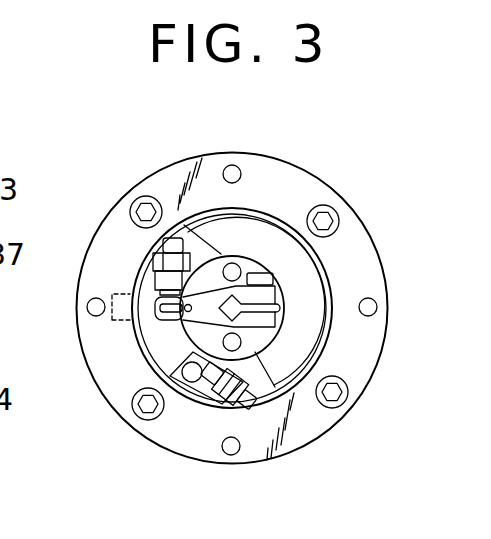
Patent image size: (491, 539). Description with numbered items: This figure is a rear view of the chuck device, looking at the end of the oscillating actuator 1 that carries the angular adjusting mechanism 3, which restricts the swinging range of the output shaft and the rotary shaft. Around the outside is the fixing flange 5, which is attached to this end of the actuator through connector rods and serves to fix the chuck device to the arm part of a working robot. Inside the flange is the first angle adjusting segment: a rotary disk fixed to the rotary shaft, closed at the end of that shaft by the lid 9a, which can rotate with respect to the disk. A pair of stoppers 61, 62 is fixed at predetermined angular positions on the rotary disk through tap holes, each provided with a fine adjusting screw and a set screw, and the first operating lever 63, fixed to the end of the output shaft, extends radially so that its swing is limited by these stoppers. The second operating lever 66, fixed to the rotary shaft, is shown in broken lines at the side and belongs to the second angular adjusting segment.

The oscillating actuator 1 is at (287, 222).
The angular adjusting mechanism 3 is at (292, 290).
The fixing flange 5 is at (145, 428).
The lid 9a is at (248, 256).
The stopper 61 is at (184, 225).
The stopper 62 is at (213, 402).
The first operating lever 63 is at (263, 325).
The second operating lever 66 is at (112, 313).